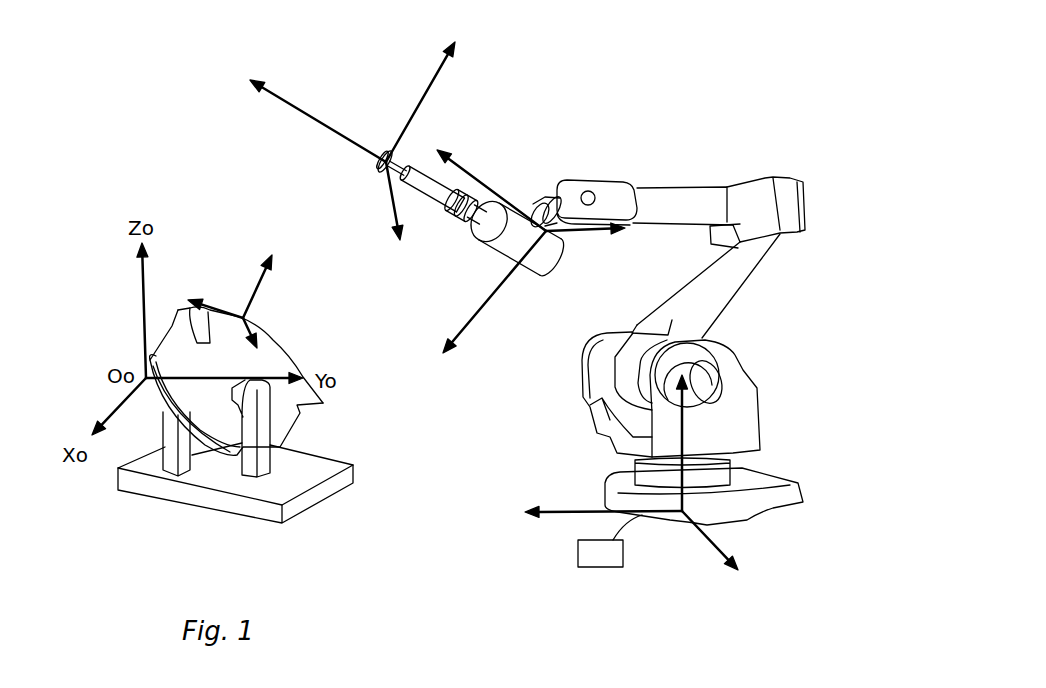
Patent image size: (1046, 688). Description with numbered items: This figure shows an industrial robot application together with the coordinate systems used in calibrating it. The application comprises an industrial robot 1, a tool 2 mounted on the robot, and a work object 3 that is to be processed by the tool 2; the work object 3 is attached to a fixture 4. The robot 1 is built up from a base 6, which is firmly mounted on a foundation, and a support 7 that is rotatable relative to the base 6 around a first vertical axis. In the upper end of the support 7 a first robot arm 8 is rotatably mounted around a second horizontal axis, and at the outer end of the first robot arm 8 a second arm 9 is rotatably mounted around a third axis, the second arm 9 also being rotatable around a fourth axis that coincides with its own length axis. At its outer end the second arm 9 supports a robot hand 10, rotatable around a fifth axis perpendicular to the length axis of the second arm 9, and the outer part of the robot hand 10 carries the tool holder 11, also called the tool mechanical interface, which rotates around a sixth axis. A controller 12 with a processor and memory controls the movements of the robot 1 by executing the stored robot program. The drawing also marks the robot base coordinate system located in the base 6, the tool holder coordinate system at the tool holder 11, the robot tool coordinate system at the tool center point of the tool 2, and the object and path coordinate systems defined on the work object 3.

The industrial robot 1 is at (790, 351).
The tool 2 is at (375, 172).
The work object 3 is at (297, 403).
The fixture 4 is at (323, 463).
The base 6 is at (777, 502).
The support 7 is at (740, 418).
The first robot arm 8 is at (720, 293).
The second arm 9 is at (667, 197).
The robot hand 10 is at (588, 183).
The tool holder 11 is at (530, 218).
The controller 12 is at (578, 547).